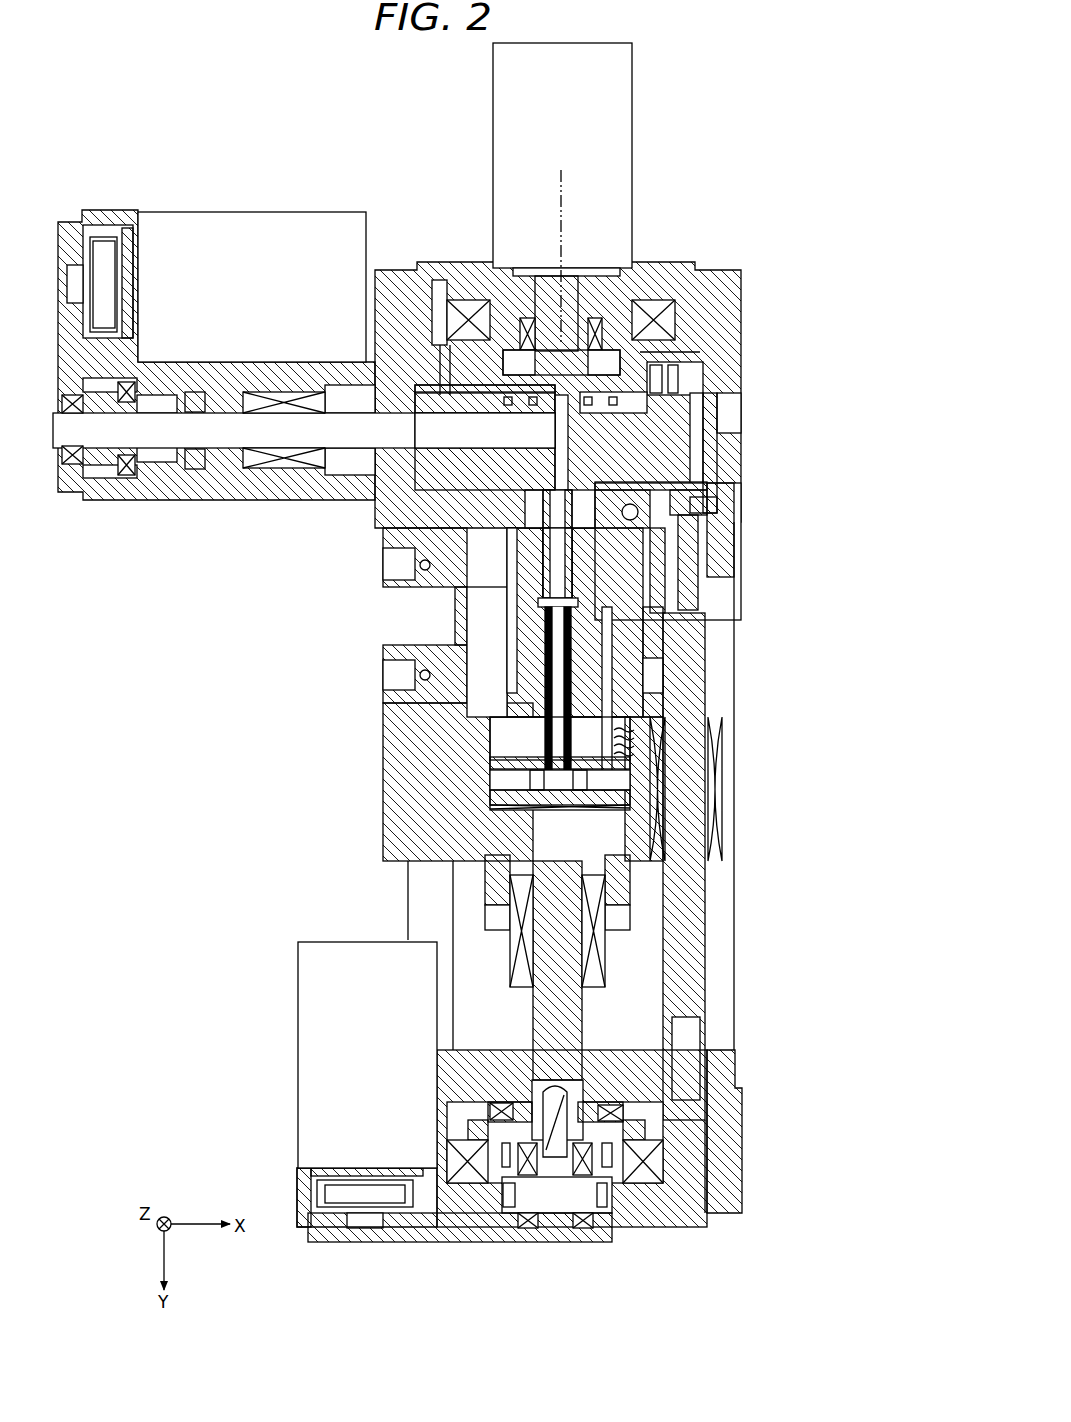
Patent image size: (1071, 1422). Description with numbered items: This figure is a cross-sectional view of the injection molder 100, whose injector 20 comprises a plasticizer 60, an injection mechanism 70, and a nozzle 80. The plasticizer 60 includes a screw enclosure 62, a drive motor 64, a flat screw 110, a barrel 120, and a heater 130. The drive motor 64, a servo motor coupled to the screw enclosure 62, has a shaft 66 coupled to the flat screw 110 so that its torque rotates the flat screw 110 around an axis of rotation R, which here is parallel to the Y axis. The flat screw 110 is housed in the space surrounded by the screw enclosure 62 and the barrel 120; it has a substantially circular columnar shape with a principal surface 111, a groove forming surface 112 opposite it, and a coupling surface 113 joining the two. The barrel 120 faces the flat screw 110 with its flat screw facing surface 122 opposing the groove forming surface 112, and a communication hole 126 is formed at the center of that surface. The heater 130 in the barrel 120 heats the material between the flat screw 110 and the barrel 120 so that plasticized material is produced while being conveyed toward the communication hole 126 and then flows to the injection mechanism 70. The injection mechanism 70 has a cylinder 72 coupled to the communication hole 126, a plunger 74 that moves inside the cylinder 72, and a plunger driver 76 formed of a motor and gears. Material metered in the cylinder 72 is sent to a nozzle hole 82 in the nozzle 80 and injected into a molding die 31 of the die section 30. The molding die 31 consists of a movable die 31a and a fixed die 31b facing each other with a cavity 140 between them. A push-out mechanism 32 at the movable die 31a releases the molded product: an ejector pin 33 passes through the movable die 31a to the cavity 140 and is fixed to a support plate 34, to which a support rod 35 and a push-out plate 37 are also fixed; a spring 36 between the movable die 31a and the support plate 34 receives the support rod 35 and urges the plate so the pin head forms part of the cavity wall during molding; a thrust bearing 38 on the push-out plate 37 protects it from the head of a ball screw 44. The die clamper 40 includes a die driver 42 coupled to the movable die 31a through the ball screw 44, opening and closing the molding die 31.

The injection molder 100 is at (740, 98).
The injector 20 is at (790, 200).
The plasticizer 60 is at (738, 248).
The screw enclosure 62 is at (708, 298).
The drive motor 64 is at (520, 135).
The shaft 66 is at (612, 300).
The axis of rotation R is at (561, 218).
The coupling surface 113 is at (445, 298).
The principal surface 111 is at (655, 340).
The flat screw 110 is at (640, 372).
The flat screw facing surface 122 is at (668, 390).
The groove forming surface 112 is at (617, 401).
The barrel 120 is at (700, 432).
The heater 130 is at (700, 425).
The communication hole 126 is at (650, 488).
The nozzle hole 82 is at (640, 535).
The nozzle 80 is at (600, 572).
The injection mechanism 70 is at (185, 512).
The plunger driver 76 is at (258, 250).
The plunger 74 is at (215, 432).
The cylinder 72 is at (500, 435).
The die section 30 is at (315, 588).
The molding die 31 is at (367, 615).
The movable die 31a is at (417, 630).
The fixed die 31b is at (417, 600).
The push-out mechanism 32 is at (372, 760).
The ejector pin 33 is at (540, 740).
The support plate 34 is at (600, 765).
The support rod 35 is at (600, 695).
The spring 36 is at (620, 722).
The push-out plate 37 is at (610, 786).
The thrust bearing 38 is at (612, 806).
The cavity 140 is at (575, 640).
The die clamper 40 is at (302, 928).
The die driver 42 is at (332, 1038).
The ball screw 44 is at (560, 1003).